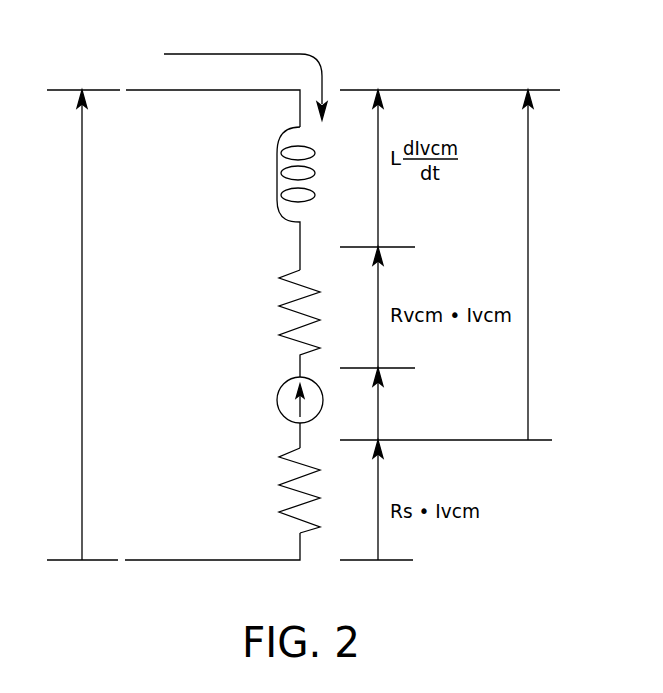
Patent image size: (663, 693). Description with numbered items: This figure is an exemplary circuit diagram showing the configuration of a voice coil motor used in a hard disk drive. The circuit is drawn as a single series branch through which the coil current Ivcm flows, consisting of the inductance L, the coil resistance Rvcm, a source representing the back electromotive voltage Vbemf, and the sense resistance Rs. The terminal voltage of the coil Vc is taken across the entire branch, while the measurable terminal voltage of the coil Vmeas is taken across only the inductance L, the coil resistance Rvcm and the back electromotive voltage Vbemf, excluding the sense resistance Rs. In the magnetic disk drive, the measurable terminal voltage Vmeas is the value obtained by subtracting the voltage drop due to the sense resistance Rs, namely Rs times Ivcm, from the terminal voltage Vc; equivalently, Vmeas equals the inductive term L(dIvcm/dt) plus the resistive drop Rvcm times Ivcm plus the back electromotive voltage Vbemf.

The inductance L is at (282, 198).
The coil resistance Rvcm is at (263, 323).
The sense resistance Rs is at (278, 490).
The back electromotive voltage Vbemf is at (364, 412).
The terminal voltage of a coil Vc is at (65, 325).
The measurable terminal voltage of a coil Vmeas is at (565, 265).
The coil current Ivcm is at (245, 72).